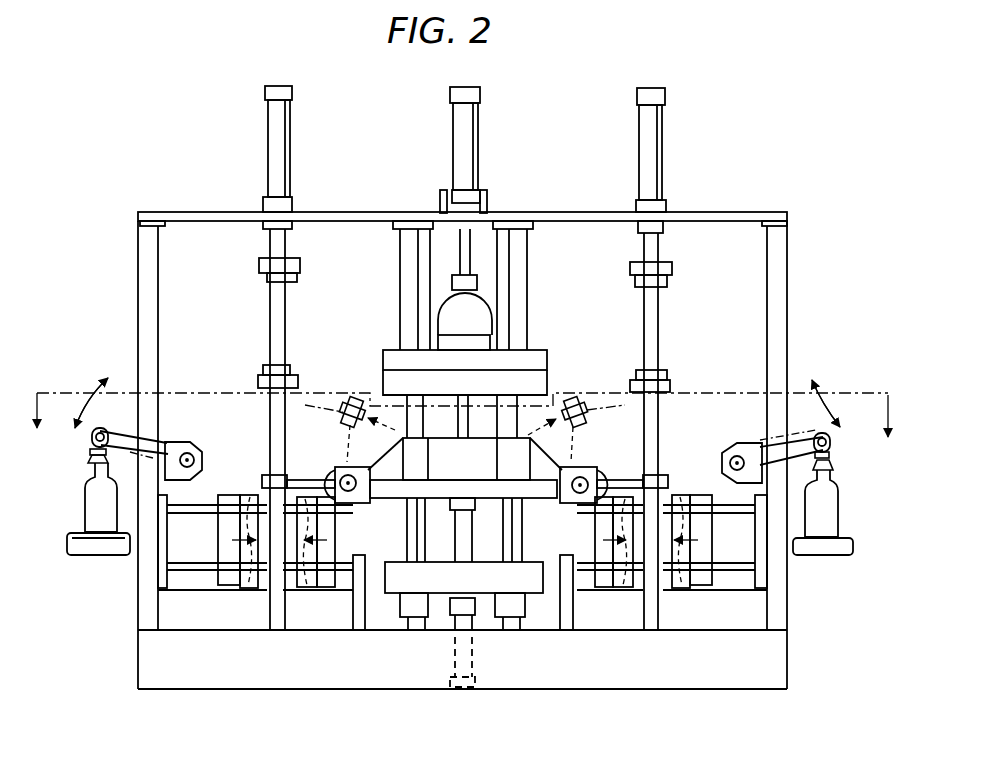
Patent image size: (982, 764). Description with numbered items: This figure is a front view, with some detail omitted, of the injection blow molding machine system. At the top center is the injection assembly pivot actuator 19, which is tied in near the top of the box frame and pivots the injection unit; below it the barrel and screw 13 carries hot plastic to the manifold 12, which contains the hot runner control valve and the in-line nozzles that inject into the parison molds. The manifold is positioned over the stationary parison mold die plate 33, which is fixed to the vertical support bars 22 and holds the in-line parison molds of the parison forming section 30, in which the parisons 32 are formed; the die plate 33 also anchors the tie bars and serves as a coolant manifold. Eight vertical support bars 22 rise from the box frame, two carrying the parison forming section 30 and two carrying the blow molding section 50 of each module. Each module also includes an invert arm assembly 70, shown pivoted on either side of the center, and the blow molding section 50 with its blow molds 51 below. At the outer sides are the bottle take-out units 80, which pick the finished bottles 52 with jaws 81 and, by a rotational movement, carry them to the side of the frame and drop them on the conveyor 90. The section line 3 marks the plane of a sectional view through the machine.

The section line 3- 3 is at (462, 435).
The manifold 12 is at (545, 350).
The barrel and screw 13 is at (480, 298).
The injection assembly pivot actuator 19 is at (463, 137).
The vertical support bars 22 is at (272, 422).
The injection molding or parison forming section 30 is at (475, 475).
The parisons 32 is at (327, 400).
The stationary parison mold die plate 33 is at (533, 377).
The blow molding section 50 is at (250, 480).
The blow molds 51 is at (250, 586).
The bottles 52 is at (95, 508).
The invert arm assembly 70 is at (325, 466).
The bottle take-out 80 is at (197, 422).
The jaws 81 is at (80, 474).
The conveyor 90 is at (98, 556).